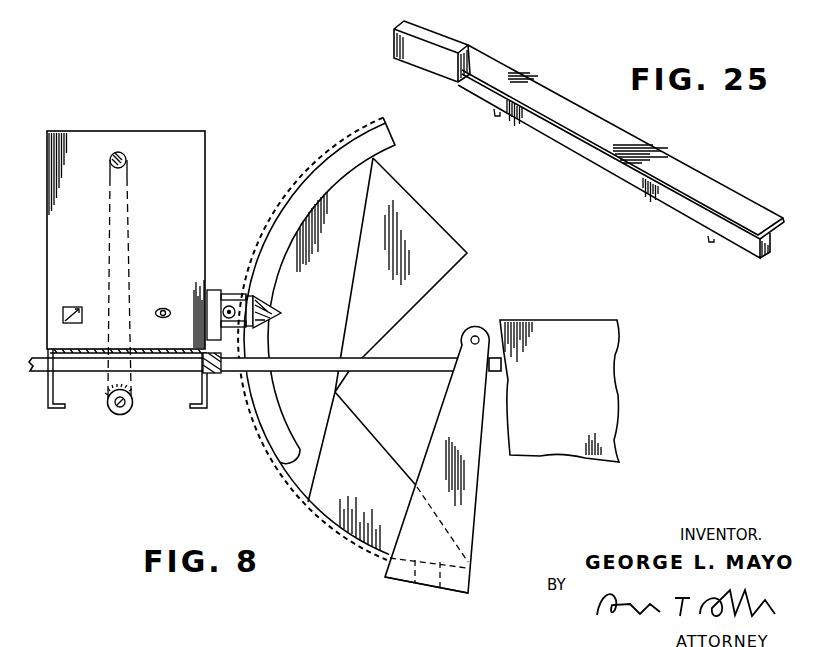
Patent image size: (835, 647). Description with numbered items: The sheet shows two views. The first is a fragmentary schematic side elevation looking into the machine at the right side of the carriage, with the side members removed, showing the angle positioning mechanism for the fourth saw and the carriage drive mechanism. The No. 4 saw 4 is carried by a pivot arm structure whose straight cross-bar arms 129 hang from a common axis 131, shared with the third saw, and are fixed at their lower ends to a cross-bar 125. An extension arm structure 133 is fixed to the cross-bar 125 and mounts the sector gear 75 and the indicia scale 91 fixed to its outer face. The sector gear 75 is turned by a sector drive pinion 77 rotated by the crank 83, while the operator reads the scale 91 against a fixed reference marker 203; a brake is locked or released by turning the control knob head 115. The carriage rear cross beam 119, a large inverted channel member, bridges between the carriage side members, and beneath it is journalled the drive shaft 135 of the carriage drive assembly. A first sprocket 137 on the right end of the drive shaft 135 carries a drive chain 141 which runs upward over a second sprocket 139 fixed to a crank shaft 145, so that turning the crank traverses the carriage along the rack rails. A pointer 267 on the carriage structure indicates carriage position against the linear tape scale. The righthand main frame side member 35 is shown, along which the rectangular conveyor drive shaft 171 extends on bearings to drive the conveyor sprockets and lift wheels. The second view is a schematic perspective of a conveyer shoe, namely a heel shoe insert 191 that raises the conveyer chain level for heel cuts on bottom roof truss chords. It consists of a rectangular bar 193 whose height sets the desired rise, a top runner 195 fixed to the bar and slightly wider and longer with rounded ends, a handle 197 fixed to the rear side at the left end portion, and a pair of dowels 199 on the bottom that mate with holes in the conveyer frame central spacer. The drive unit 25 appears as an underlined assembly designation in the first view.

In FIG. 8, the No. 4 saw 4 is at (414, 196).
In FIG. 8, the drive unit 25 is at (124, 442).
In FIG. 8, the main frame side member 35 is at (600, 415).
In FIG. 8, the sector gear 75 is at (310, 164).
In FIG. 8, the sector drive pinion 77 is at (233, 292).
In FIG. 8, the crank 83 is at (232, 297).
In FIG. 8, the indicia scale 91 is at (376, 141).
In FIG. 8, the control knob head 115 is at (163, 307).
In FIG. 8, the rear cross beam 119 is at (45, 388).
In FIG. 8, the cross-bar 125 is at (453, 589).
In FIG. 8, the cross-bar arms 129 is at (470, 490).
In FIG. 8, the common axis 131 is at (474, 333).
In FIG. 8, the extension arm structure 133 is at (342, 432).
In FIG. 8, the drive shaft 135 is at (134, 406).
In FIG. 8, the first sprocket 137 is at (132, 391).
In FIG. 8, the second sprocket 139 is at (124, 158).
In FIG. 8, the drive chain 141 is at (130, 237).
In FIG. 8, the crank shaft 145 is at (112, 167).
In FIG. 8, the drive shaft 171 is at (405, 357).
In FIG. 25, the heel shoe insert 191 is at (587, 151).
In FIG. 25, the rectangular bar 193 is at (736, 241).
In FIG. 25, the top runner 195 is at (688, 181).
In FIG. 25, the handle 197 is at (440, 60).
In FIG. 25, the dowels 199 is at (497, 114).
In FIG. 8, the fixed reference marker 203 is at (282, 314).
In FIG. 8, the pointer 267 is at (78, 299).